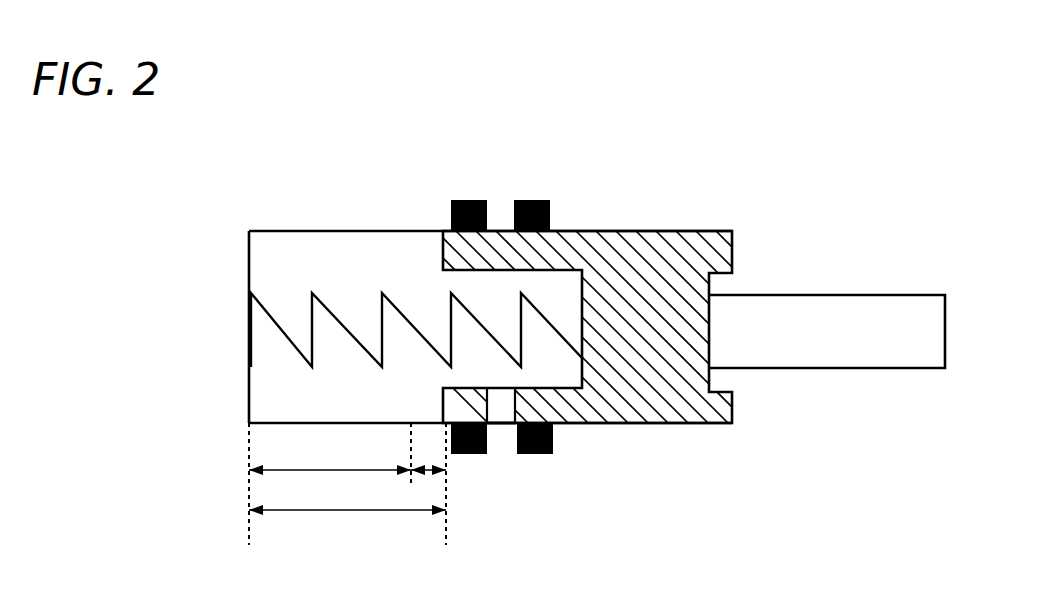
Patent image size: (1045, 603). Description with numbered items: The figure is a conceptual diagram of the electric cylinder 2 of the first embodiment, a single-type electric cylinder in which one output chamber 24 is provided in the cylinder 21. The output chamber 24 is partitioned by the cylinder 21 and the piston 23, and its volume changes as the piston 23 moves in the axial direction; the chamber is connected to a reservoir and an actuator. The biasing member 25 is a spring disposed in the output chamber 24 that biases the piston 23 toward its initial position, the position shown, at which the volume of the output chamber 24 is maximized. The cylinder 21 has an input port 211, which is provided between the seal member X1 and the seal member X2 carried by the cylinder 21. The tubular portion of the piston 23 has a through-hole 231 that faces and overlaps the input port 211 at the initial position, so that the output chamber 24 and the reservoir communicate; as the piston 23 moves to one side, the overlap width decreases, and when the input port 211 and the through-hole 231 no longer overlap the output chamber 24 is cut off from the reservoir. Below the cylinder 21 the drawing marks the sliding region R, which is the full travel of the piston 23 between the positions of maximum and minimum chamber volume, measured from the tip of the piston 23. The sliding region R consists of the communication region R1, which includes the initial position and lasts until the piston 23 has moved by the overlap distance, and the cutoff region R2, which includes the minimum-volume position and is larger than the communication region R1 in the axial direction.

The electric cylinder 2 is at (138, 170).
The cylinder 21 is at (250, 392).
The input port 211 is at (503, 423).
The piston 23 is at (623, 245).
The through-hole 231 is at (502, 398).
The output chamber 24 is at (277, 263).
The biasing member 25 is at (268, 317).
The seal member X1 is at (467, 198).
The seal member X2 is at (527, 198).
The sliding region R is at (342, 512).
The communication region R1 is at (425, 472).
The cutoff region R2 is at (352, 470).